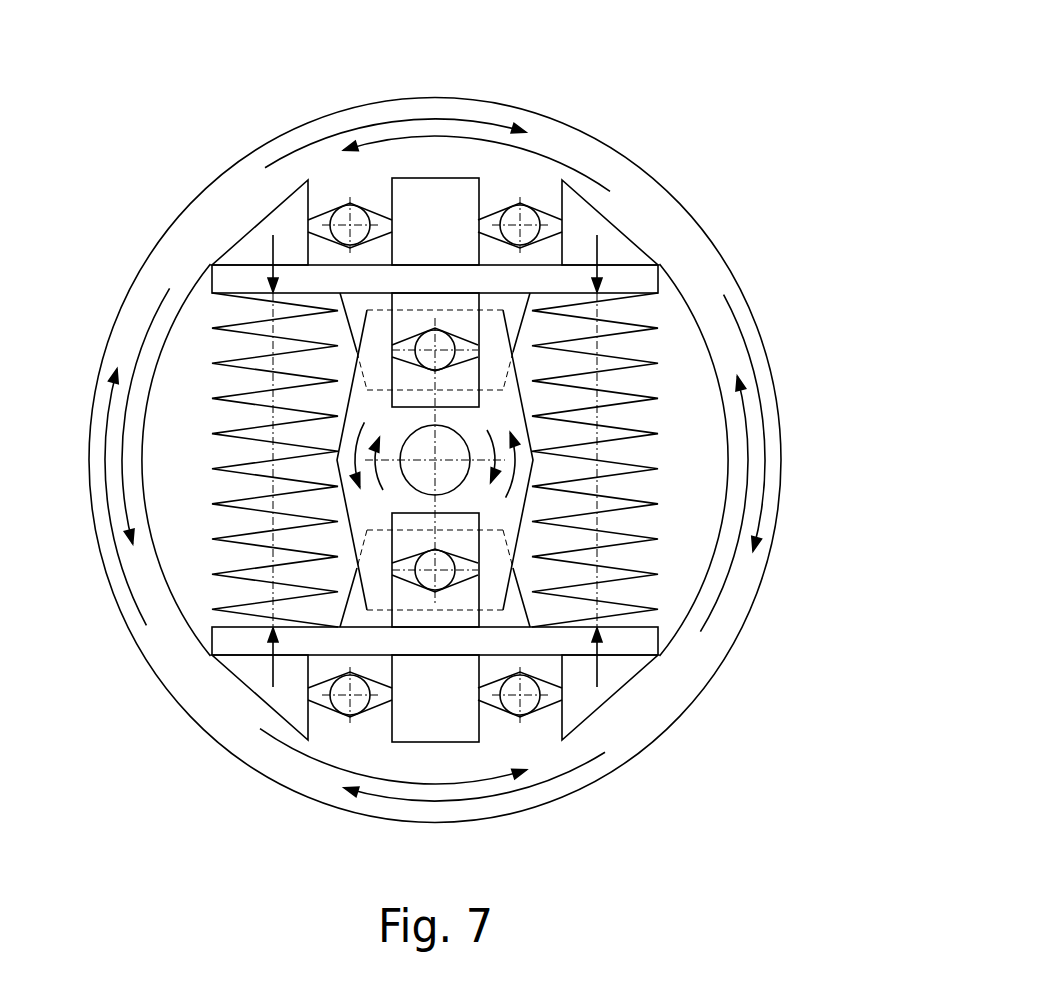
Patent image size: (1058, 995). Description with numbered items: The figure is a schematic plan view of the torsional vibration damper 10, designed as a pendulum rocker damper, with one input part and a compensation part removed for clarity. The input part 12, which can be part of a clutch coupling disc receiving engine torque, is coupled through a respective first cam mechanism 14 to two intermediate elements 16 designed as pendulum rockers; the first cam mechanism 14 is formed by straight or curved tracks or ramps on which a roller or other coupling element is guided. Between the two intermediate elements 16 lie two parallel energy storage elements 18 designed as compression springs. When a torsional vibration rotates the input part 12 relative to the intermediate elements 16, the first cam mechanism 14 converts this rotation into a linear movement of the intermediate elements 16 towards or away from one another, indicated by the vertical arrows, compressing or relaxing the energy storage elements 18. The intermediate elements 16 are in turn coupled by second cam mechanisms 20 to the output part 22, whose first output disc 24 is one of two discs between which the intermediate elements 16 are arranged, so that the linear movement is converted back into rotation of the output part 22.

The torsional vibration damper 10 is at (183, 138).
The input part 12 is at (675, 218).
The first cam mechanism 14 is at (542, 202).
The intermediate element 16 is at (648, 278).
The energy storage element 18 is at (650, 378).
The second cam mechanism 20 is at (472, 327).
The output part 22 is at (512, 514).
The first output disc 24 is at (512, 514).